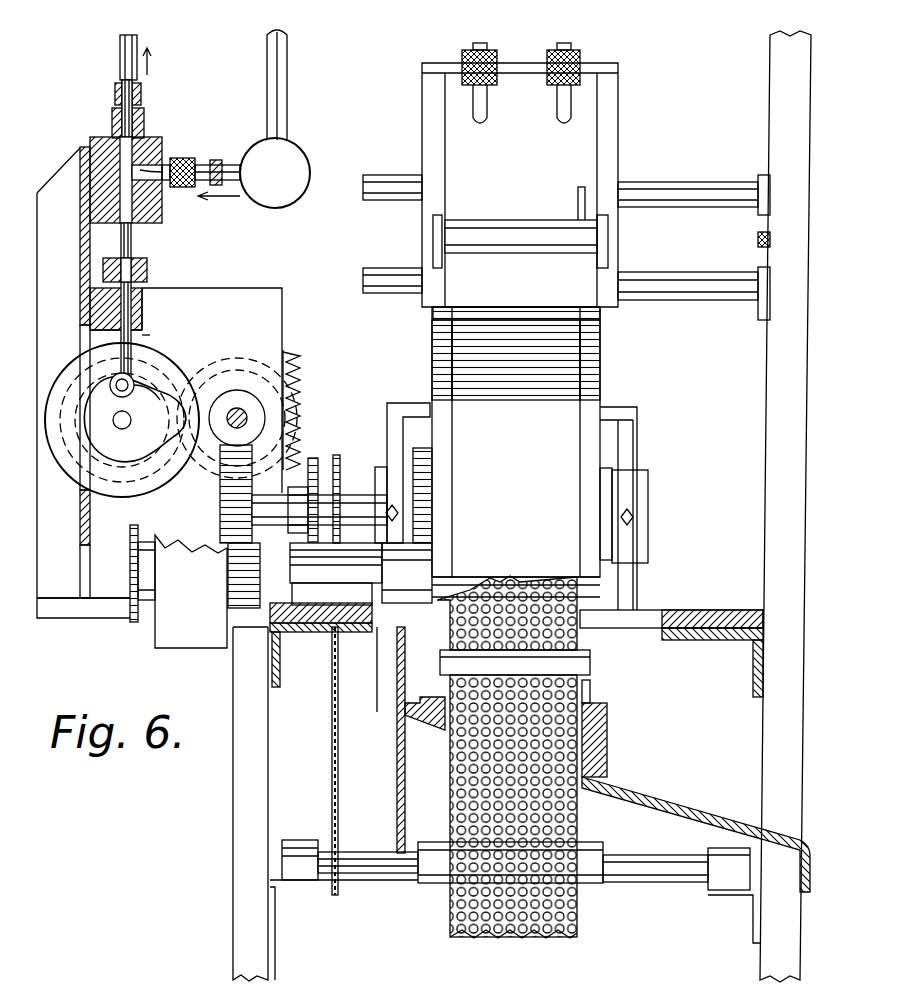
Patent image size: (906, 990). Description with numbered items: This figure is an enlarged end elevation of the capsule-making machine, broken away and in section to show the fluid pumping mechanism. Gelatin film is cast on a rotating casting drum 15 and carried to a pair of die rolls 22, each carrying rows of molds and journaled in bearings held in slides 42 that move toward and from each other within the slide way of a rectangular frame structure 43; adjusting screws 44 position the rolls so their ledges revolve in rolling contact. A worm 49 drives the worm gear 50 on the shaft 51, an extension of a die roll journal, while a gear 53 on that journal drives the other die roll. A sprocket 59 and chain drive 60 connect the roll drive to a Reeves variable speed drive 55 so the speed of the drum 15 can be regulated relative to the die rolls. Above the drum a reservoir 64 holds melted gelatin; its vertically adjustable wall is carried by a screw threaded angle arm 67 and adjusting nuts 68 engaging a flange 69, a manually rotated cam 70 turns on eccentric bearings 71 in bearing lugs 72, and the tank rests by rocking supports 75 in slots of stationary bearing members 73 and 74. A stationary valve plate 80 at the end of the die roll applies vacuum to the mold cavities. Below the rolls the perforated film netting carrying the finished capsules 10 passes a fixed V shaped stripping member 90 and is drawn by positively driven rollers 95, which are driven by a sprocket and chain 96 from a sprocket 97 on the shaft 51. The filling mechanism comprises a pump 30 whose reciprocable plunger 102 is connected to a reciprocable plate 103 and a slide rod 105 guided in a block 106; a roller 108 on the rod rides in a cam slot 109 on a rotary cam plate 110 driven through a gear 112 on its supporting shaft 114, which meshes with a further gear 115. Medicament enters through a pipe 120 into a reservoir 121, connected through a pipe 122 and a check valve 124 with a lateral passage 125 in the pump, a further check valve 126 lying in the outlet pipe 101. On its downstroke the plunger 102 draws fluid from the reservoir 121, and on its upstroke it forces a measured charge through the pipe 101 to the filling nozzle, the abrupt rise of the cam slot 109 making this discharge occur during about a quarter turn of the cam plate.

The capsule 10 is at (530, 765).
The casting drum 15 is at (516, 452).
The die roll 22 is at (582, 578).
The pump 30 is at (160, 212).
The slide 42 is at (375, 483).
The rectangular frame structure 43 is at (387, 420).
The adjusting screw 44 is at (390, 517).
The worm 49 is at (240, 408).
The worm gear 50 is at (220, 526).
The shaft 51 is at (319, 510).
The gear 53 is at (413, 452).
The Reeves variable speed drive 55 is at (191, 591).
The sprocket 59 is at (301, 500).
The chain drive 60 is at (130, 536).
The reservoir 64 is at (520, 185).
The screw threaded angle arm 67 is at (557, 98).
The adjusting nut 68 is at (547, 58).
The flange 69 is at (430, 66).
The manually rotated cam 70 is at (500, 228).
The eccentric bearing 71 is at (442, 241).
The bearing lug 72 is at (433, 227).
The stationary bearing member 73 is at (758, 238).
The stationary bearing member 74 is at (758, 277).
The rocking support 75 is at (677, 186).
The stationary valve plate 80 is at (612, 473).
The V shaped stripping member 90 is at (585, 666).
The positively driven roller 95 is at (510, 862).
The sprocket and chain 96 is at (332, 746).
The sprocket 97 is at (340, 462).
The pipe 101 is at (137, 42).
The plunger 102 is at (131, 236).
The reciprocable plate 103 is at (147, 276).
The slide rod 105 is at (135, 336).
The block 106 is at (142, 302).
The roller 108 is at (134, 382).
The cam slot 109 is at (158, 388).
The rotary cam plate 110 is at (116, 494).
The gear 112 is at (158, 480).
The supporting shaft 114 is at (131, 422).
The gear 115 is at (290, 406).
The pipe 120 is at (275, 72).
The reservoir 121 is at (275, 173).
The pipe 122 is at (228, 160).
The check valve 124 is at (190, 160).
The lateral passage 125 is at (150, 175).
The check valve 126 is at (115, 127).